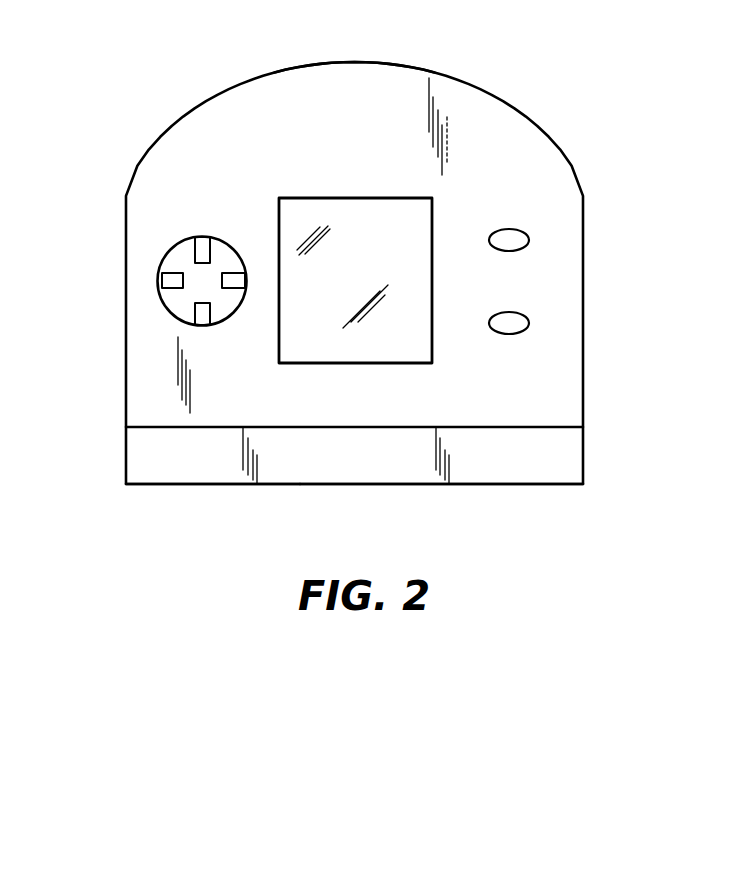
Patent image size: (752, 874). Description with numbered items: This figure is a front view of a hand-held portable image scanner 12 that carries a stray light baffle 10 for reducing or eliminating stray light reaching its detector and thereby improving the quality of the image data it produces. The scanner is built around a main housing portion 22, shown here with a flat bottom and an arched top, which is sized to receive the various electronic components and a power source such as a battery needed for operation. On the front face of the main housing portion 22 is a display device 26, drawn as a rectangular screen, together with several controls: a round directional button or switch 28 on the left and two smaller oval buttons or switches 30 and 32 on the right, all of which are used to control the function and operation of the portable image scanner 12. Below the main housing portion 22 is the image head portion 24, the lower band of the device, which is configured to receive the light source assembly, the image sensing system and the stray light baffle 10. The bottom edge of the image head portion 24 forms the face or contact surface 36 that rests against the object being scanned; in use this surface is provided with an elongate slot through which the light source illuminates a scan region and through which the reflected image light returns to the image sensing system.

The stray light baffle 10 is at (508, 502).
The portable image scanner 12 is at (142, 78).
The main housing portion 22 is at (355, 62).
The image head portion 24 is at (583, 458).
The display device 26 is at (358, 197).
The button or switch 28 is at (220, 237).
The button or switch 30 is at (507, 229).
The button or switch 32 is at (510, 334).
The contact surface 36 is at (151, 484).